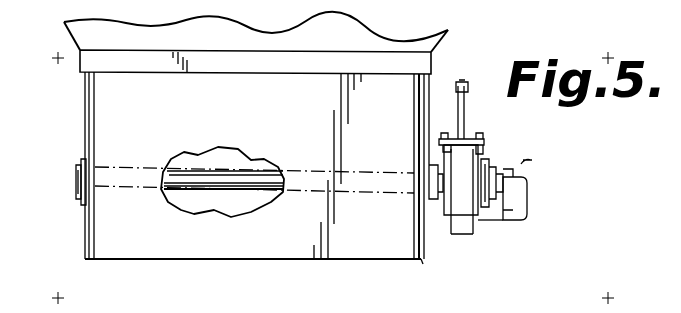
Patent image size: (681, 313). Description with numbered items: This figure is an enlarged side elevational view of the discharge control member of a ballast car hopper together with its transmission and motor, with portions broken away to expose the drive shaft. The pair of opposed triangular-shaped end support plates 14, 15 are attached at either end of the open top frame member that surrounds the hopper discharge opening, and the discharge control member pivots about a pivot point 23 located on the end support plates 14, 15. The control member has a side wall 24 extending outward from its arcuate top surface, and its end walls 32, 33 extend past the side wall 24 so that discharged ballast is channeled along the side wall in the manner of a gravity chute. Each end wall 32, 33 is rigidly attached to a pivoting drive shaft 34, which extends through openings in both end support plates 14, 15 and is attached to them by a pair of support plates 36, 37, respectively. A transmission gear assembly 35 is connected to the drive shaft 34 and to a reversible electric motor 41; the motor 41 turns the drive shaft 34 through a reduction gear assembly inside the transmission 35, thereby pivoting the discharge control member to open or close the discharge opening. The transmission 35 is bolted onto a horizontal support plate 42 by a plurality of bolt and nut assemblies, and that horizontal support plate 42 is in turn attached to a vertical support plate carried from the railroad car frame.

The end support plate 14 is at (430, 88).
The end support plate 15 is at (83, 108).
The pivot point 23 is at (73, 176).
The side wall 24 is at (277, 240).
The end wall 32 is at (421, 258).
The end wall 33 is at (85, 243).
The drive shaft 34 is at (197, 163).
The transmission gear assembly 35 is at (462, 232).
The support plate 36 is at (429, 162).
The support plate 37 is at (78, 157).
The reversible electric motor 41 is at (524, 217).
The horizontal support plate 42 is at (468, 138).